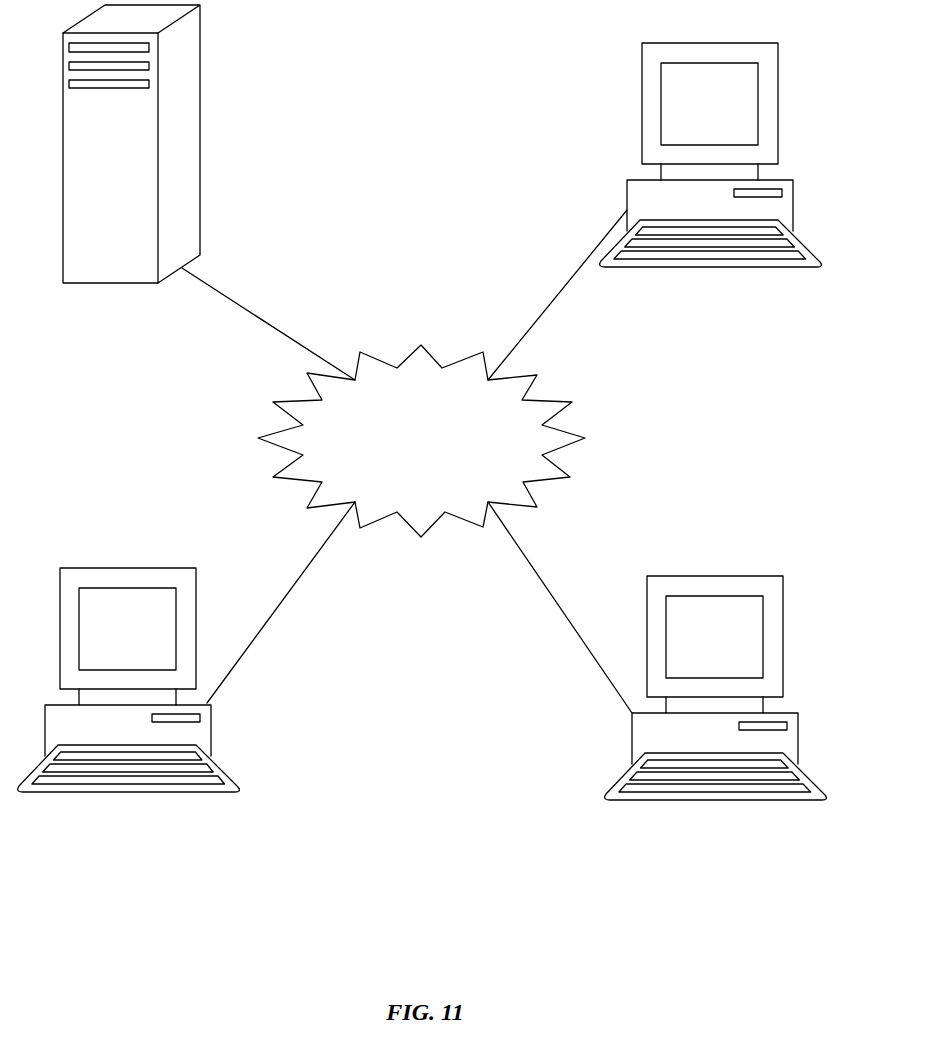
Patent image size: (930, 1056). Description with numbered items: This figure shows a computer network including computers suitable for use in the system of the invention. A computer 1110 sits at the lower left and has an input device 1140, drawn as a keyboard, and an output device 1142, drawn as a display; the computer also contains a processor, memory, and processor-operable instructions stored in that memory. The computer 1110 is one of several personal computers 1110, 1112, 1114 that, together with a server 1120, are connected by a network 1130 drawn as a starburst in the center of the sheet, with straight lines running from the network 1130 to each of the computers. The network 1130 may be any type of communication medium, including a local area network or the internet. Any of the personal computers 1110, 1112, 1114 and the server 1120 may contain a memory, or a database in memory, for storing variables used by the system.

The computer 1110 is at (215, 678).
The computer 1112 is at (722, 825).
The computer 1114 is at (726, 294).
The server 1120 is at (234, 149).
The network 1130 is at (407, 461).
The input device 1140 is at (70, 773).
The output device 1142 is at (162, 623).